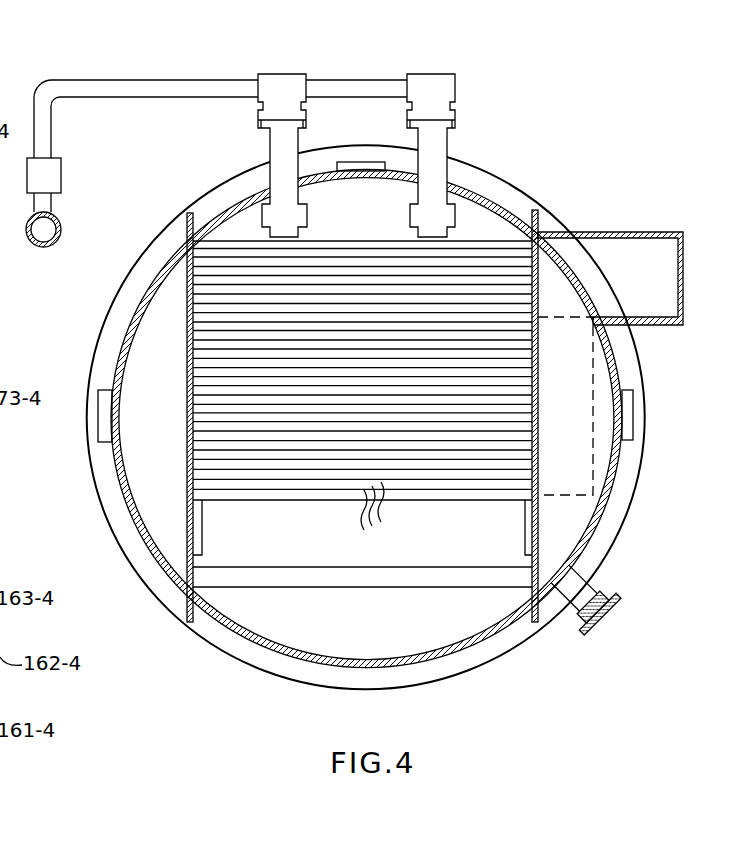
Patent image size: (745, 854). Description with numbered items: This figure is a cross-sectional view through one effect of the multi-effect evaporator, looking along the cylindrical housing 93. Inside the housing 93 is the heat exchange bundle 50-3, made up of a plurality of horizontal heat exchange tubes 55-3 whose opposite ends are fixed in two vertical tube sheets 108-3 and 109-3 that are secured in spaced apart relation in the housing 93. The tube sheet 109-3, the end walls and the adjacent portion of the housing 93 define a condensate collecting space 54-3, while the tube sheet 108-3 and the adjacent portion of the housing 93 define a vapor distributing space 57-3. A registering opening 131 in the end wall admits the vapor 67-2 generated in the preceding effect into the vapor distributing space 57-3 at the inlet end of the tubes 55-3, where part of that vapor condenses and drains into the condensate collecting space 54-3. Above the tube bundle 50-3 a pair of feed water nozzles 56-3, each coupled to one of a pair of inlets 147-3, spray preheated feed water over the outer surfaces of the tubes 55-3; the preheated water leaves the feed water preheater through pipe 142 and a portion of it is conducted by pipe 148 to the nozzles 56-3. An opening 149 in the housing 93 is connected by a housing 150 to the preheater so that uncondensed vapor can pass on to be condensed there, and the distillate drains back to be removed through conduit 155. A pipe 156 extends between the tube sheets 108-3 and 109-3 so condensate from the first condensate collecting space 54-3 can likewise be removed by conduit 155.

The cylindrical housing 93 is at (620, 479).
The registering opening 131 is at (598, 398).
The condensate collecting space 54-3 is at (170, 419).
The tube sheet 109-3 is at (187, 330).
The heat exchange bundle 50-3 is at (293, 506).
The vapor distributing space 57-3 is at (391, 231).
The vapor 67-2 is at (565, 378).
The tube sheet 108-3 is at (535, 493).
The pipe 156 is at (253, 580).
The heat exchange tubes 55-3 is at (384, 514).
The housing 150 is at (683, 258).
The opening 149 is at (570, 267).
The pipe 148 is at (147, 81).
The pipe 142 is at (62, 230).
The inlets 147-3 is at (272, 146).
The feed water nozzles 56-3 is at (307, 212).
The conduit 155 is at (603, 590).